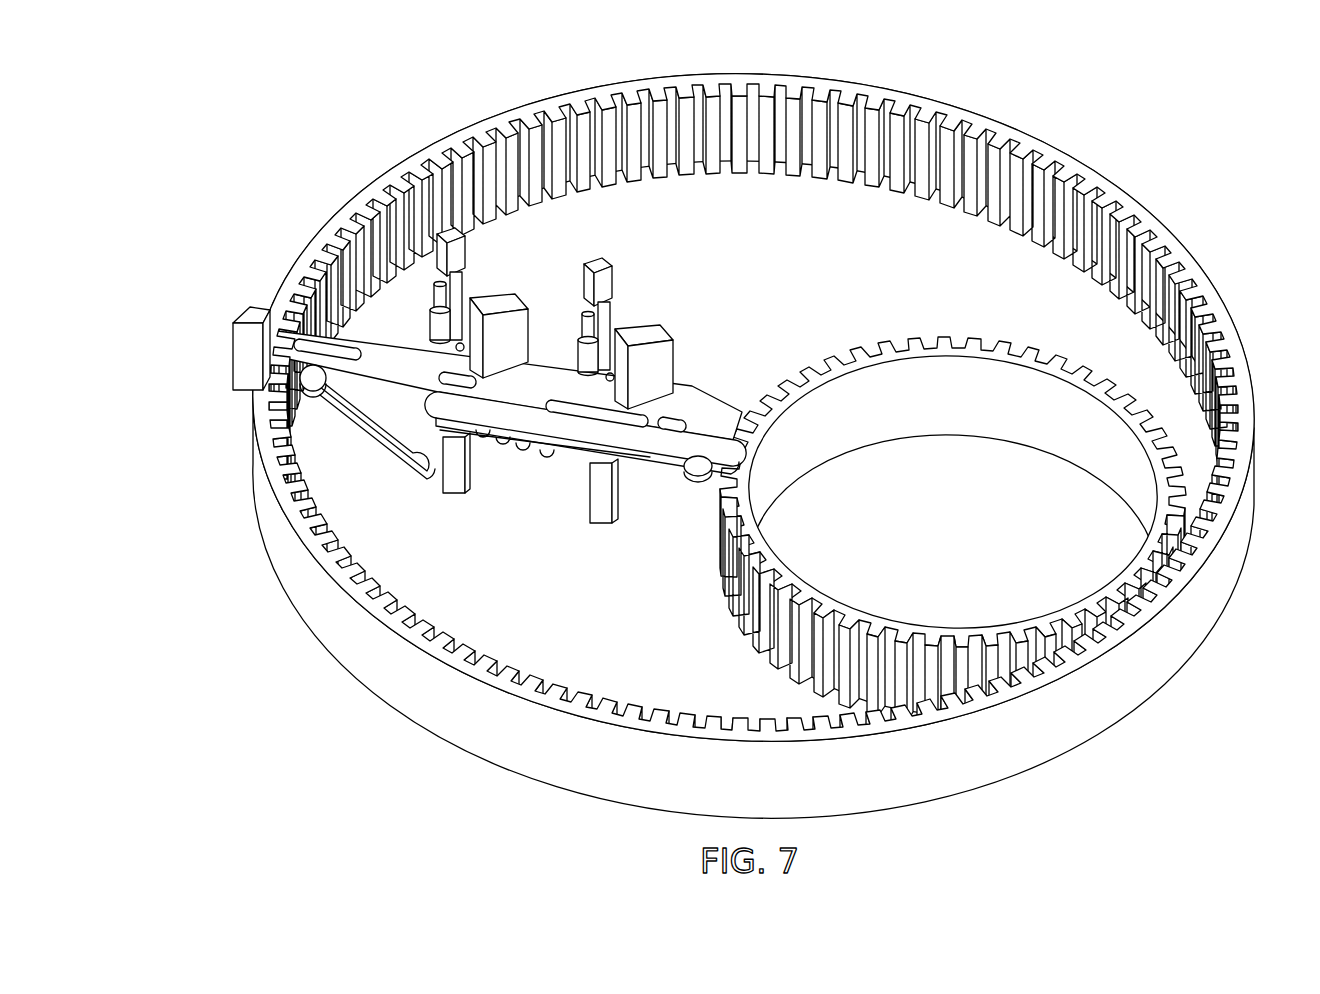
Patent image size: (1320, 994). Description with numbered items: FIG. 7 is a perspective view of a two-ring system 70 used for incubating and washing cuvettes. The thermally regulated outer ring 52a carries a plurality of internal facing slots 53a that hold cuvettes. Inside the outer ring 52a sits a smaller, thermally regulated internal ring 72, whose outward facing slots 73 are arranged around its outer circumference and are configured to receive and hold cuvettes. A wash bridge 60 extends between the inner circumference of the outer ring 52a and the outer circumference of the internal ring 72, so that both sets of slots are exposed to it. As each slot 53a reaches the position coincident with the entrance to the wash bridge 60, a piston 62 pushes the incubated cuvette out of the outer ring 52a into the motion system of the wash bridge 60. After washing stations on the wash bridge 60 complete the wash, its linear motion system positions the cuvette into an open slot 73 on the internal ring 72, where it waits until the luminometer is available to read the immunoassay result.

The two-ring system 70 is at (340, 124).
The outer ring 52a is at (327, 237).
The internal facing slots 53a is at (1088, 178).
The outward facing slots 73 is at (930, 338).
The internal ring 72 is at (1000, 434).
The wash bridge 60 is at (668, 478).
The piston 62 is at (247, 323).